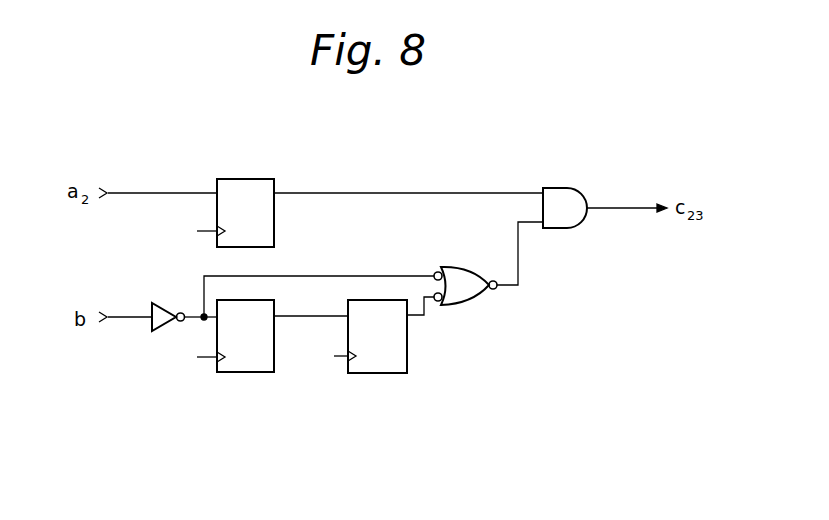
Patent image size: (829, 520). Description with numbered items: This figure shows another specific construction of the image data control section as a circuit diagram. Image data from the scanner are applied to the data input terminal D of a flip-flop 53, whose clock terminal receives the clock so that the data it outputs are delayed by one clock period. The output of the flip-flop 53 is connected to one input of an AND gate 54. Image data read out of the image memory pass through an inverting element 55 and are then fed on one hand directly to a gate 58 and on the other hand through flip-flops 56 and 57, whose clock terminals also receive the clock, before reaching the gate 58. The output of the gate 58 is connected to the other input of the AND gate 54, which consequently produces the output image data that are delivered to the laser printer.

The flip-flop 53 is at (248, 178).
The AND gate 54 is at (568, 187).
The inverter 55 is at (168, 304).
The flip-flop 56 is at (250, 373).
The flip-flop 57 is at (378, 374).
The AND gate 58 is at (471, 306).